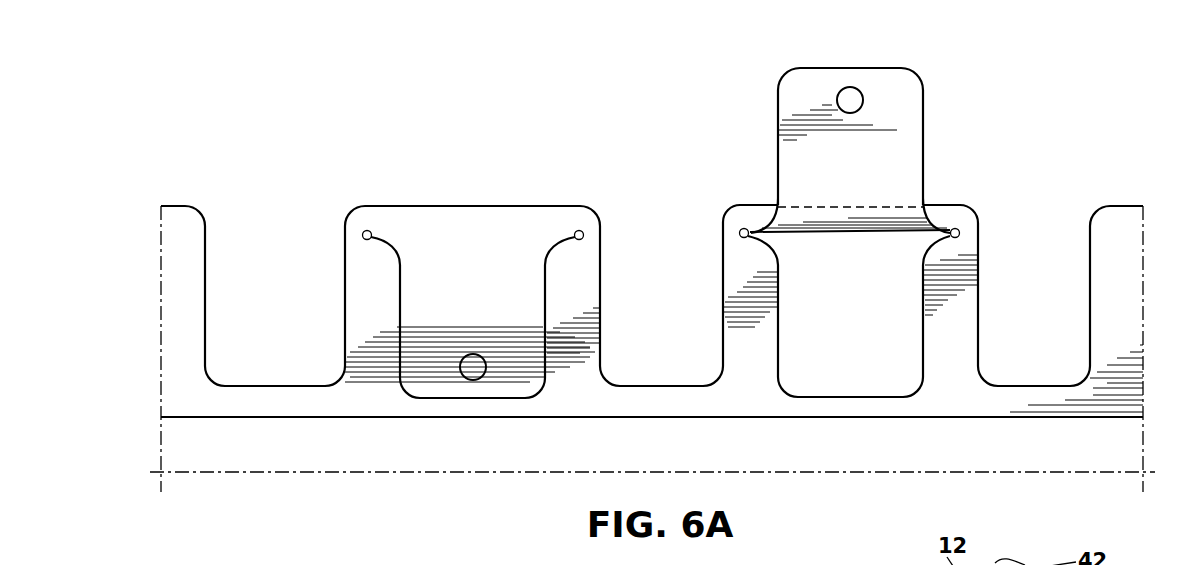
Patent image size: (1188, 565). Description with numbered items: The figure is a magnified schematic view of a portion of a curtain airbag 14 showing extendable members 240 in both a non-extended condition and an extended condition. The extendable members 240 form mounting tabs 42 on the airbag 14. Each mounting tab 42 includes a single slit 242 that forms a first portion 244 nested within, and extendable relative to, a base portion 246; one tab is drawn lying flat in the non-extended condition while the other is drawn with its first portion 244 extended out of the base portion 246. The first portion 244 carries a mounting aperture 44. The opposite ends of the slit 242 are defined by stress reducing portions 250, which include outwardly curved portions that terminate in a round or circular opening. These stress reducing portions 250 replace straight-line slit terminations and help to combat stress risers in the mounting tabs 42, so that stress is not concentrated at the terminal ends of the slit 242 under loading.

The airbag 14 is at (294, 156).
The mounting tab 42 is at (380, 180).
The mounting aperture 44 is at (849, 99).
The extendable member 240 is at (437, 165).
The slit 242 is at (547, 297).
The first portion 244 is at (503, 284).
The base portion 246 is at (570, 318).
The stress reducing portion 250 is at (362, 238).